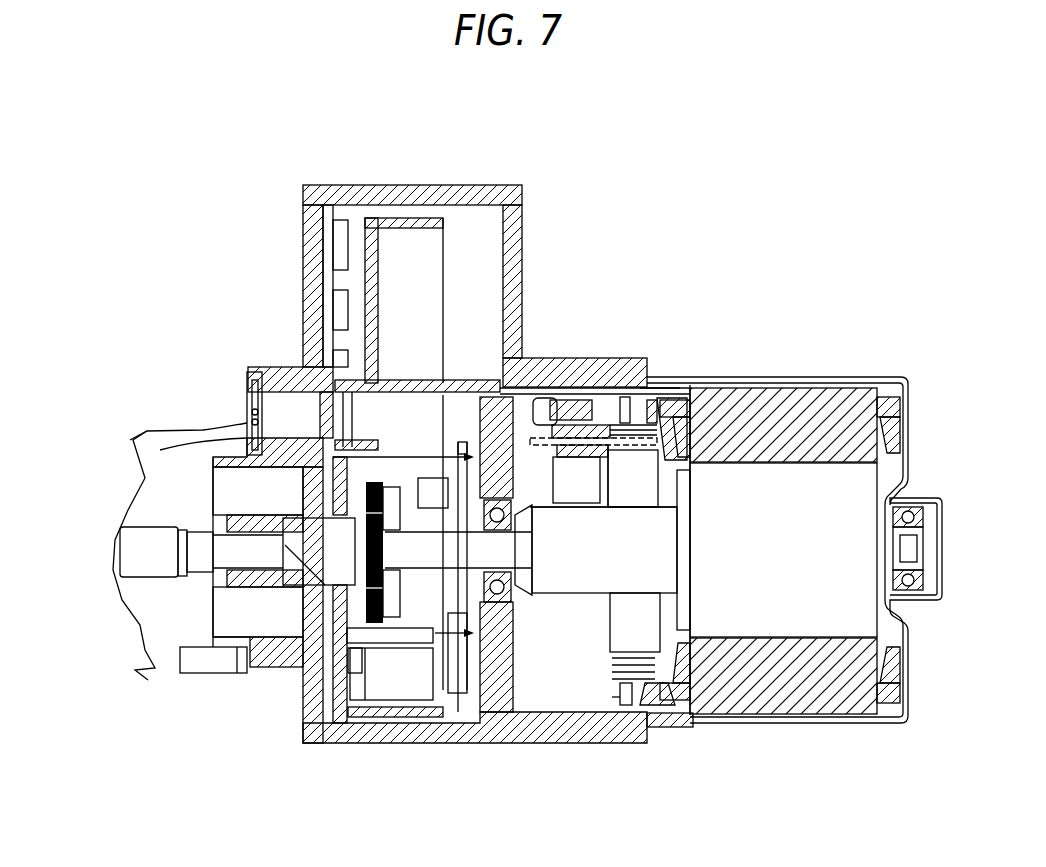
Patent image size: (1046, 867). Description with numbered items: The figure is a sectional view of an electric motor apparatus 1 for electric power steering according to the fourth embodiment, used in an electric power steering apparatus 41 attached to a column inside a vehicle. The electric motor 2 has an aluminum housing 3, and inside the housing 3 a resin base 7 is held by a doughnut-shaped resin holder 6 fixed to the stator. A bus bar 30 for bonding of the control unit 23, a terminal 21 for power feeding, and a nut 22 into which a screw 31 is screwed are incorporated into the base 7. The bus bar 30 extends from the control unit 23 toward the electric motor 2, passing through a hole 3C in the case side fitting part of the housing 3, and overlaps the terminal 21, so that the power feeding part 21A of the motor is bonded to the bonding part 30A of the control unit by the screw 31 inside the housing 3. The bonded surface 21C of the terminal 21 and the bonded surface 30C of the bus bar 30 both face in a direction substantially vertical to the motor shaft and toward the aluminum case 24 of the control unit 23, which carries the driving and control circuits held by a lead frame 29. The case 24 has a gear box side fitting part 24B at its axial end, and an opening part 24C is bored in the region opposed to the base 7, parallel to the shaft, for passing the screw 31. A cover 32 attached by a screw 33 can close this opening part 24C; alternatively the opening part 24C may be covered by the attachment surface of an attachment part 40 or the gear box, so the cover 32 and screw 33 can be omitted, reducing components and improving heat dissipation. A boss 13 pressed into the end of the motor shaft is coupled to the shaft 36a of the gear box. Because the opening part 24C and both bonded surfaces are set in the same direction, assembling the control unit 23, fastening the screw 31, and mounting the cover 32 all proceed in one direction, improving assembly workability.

The electric motor apparatus for electric power steering 1 is at (740, 519).
The electric motor 2 is at (840, 377).
The housing 3 is at (527, 196).
The hole 3C is at (503, 400).
The holder 6 is at (697, 722).
The base 7 is at (690, 403).
The boss 13 is at (243, 580).
The terminal for power feeding 21 is at (590, 395).
The power feeding part 21A is at (557, 395).
The bonded surface 21C is at (605, 398).
The nut 22 is at (563, 412).
The control unit 23 is at (352, 752).
The case 24 is at (410, 743).
The gear box side fitting part 24B is at (233, 673).
The opening part 24C is at (287, 432).
The lead frame 29 is at (363, 222).
The bus bar for bonding 30 is at (460, 372).
The bonding part 30A is at (550, 395).
The bonded surface 30C is at (645, 362).
The screw 31 is at (550, 427).
The cover 32 is at (160, 450).
The screw 33 is at (247, 422).
The shaft 36a is at (155, 560).
The attachment part 40 is at (197, 663).
The electric power steering apparatus 41 is at (734, 194).